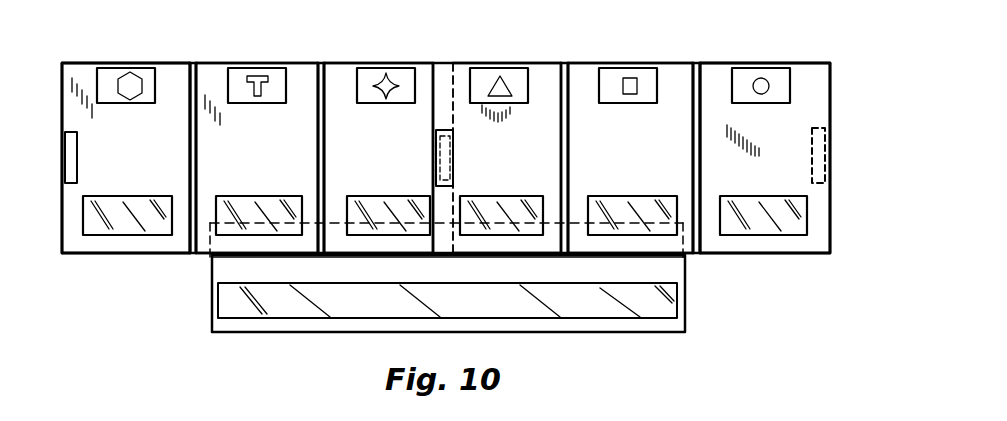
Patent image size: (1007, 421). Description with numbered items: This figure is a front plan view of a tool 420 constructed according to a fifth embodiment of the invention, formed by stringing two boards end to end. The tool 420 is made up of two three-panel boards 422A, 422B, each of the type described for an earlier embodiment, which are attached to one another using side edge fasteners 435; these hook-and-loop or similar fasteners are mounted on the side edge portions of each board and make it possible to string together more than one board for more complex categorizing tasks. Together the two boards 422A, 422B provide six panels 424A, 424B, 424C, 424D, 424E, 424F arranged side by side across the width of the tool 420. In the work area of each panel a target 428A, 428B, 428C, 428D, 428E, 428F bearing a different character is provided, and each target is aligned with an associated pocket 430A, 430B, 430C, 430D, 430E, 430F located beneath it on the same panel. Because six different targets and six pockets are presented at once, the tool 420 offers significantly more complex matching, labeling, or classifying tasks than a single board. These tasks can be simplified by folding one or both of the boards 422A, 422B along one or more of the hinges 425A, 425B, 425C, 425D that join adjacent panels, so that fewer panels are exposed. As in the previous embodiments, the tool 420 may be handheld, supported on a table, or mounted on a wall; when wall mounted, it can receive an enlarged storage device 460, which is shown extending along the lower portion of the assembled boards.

The tool 420 is at (445, 53).
The three-panel board 422A is at (233, 58).
The three-panel board 422B is at (730, 57).
The panel 424A is at (146, 256).
The panel 424B is at (208, 257).
The panel 424C is at (345, 62).
The panel 424D is at (507, 254).
The panel 424E is at (682, 62).
The panel 424F is at (779, 254).
The hinge 425A is at (190, 123).
The hinge 425B is at (320, 123).
The hinge 425C is at (572, 117).
The hinge 425D is at (705, 122).
The target 428A is at (118, 66).
The target 428B is at (282, 64).
The target 428C is at (376, 104).
The target 428D is at (545, 35).
The target 428E is at (647, 66).
The target 428F is at (786, 66).
The pocket 430A is at (160, 178).
The pocket 430B is at (283, 197).
The pocket 430C is at (352, 197).
The pocket 430D is at (536, 182).
The pocket 430E is at (607, 197).
The pocket 430F is at (787, 180).
The side edge fastener 435 is at (64, 135).
The enlarged storage device 460 is at (211, 333).